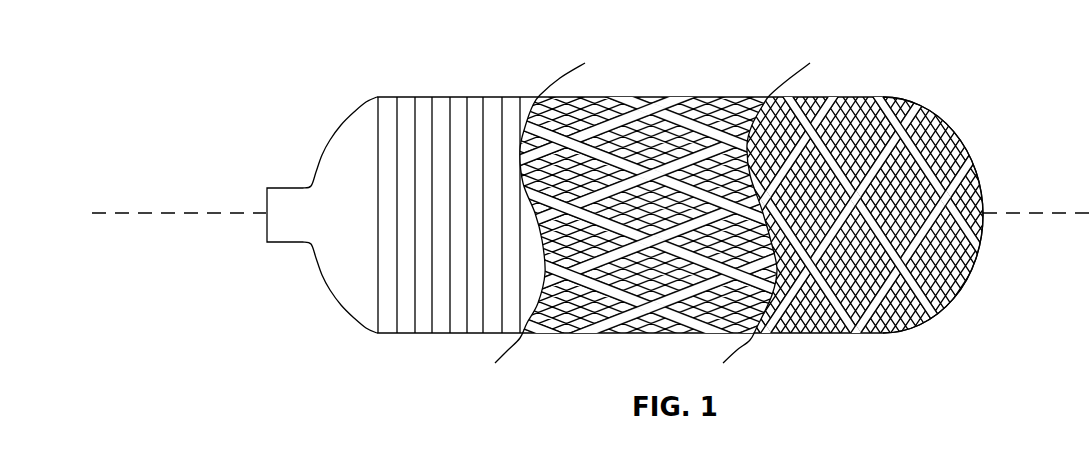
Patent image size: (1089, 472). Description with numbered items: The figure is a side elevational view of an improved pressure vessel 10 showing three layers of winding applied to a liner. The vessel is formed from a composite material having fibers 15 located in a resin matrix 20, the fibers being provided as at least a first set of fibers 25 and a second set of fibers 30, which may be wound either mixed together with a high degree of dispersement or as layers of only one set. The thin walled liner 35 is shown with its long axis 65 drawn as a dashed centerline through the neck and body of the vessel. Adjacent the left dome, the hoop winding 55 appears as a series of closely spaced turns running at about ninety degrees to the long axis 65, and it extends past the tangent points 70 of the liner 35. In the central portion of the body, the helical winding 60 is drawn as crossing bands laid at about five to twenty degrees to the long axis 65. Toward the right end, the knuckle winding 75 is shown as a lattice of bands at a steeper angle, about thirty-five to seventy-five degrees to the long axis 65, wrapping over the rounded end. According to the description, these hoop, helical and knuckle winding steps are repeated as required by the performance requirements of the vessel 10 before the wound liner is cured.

The improved pressure vessel 10 is at (187, 74).
The fibers 15 is at (972, 193).
The resin matrix 20 is at (948, 278).
The first set of fibers 25 is at (793, 100).
The second set of fibers 30 is at (612, 97).
The thin walled liner 35 is at (360, 120).
The hoop winding 55 is at (407, 103).
The helical winding 60 is at (703, 93).
The long axis 65 is at (120, 213).
The tangent points 70 is at (400, 333).
The knuckle winding 75 is at (940, 127).